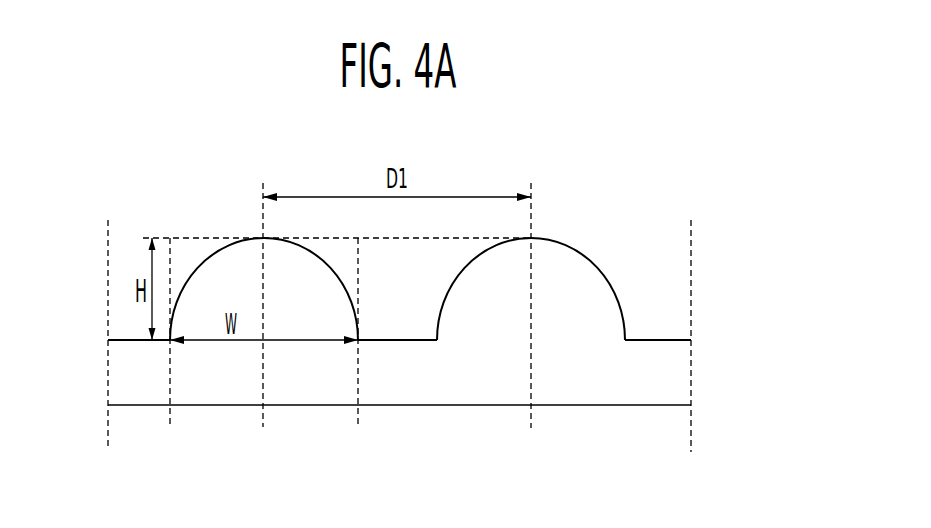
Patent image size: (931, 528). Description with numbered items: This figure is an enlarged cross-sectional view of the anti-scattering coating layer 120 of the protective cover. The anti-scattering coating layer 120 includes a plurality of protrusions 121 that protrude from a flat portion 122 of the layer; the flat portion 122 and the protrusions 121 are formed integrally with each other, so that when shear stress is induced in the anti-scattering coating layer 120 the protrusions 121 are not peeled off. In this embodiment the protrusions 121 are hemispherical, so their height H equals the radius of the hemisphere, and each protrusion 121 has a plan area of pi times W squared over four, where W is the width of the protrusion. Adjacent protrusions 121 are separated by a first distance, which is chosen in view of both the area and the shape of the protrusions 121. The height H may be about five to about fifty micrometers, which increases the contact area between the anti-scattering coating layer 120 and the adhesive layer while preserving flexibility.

The anti-scattering coating layer 120 is at (436, 274).
The protrusions 121 is at (563, 262).
The flat portion 122 is at (657, 339).